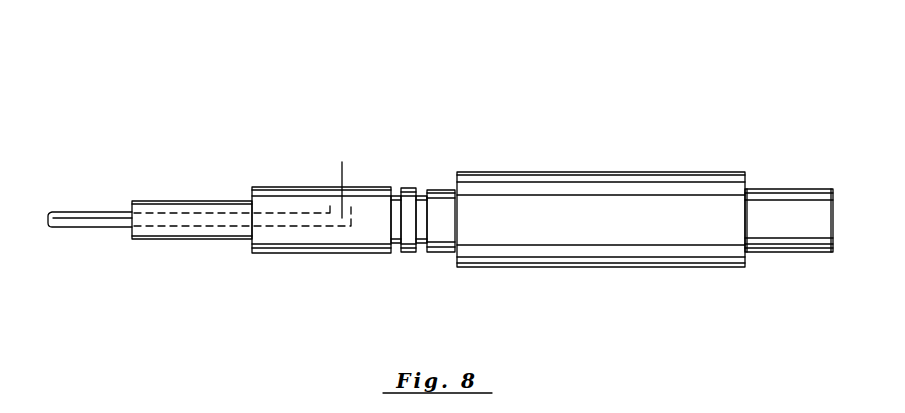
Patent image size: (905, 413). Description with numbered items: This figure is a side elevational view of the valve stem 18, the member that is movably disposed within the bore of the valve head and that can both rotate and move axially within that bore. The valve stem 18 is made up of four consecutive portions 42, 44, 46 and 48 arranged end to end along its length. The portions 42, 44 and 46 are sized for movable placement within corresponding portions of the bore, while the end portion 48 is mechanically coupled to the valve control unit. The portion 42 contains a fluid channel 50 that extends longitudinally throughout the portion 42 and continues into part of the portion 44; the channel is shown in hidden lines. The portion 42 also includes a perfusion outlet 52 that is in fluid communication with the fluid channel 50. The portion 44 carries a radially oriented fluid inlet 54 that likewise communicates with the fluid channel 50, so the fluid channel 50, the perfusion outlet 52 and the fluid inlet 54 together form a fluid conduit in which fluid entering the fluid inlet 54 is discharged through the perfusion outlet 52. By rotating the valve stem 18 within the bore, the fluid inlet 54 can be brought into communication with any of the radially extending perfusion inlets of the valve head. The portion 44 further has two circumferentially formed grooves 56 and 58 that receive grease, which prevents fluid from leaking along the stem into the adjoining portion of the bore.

The valve stem 18 is at (405, 128).
The portion 42 is at (177, 240).
The portion 44 is at (460, 277).
The portion 46 is at (590, 267).
The portion 48 is at (788, 188).
The fluid channel 50 is at (163, 218).
The perfusion outlet 52 is at (80, 212).
The fluid inlet 54 is at (328, 202).
The groove 56 is at (397, 197).
The groove 58 is at (433, 192).